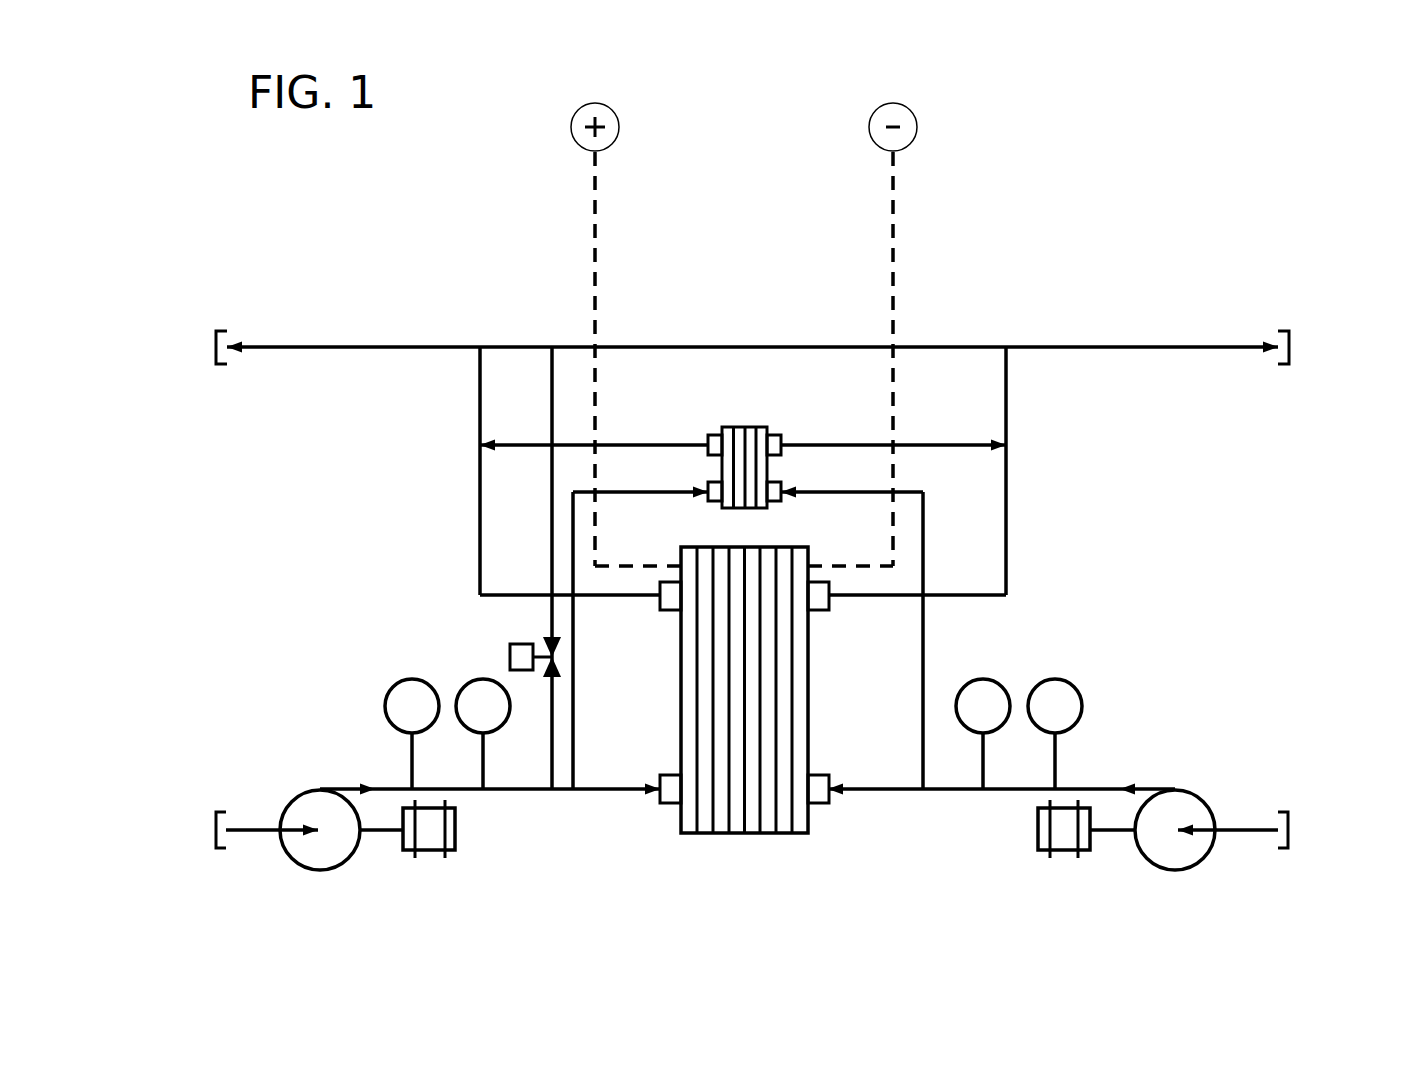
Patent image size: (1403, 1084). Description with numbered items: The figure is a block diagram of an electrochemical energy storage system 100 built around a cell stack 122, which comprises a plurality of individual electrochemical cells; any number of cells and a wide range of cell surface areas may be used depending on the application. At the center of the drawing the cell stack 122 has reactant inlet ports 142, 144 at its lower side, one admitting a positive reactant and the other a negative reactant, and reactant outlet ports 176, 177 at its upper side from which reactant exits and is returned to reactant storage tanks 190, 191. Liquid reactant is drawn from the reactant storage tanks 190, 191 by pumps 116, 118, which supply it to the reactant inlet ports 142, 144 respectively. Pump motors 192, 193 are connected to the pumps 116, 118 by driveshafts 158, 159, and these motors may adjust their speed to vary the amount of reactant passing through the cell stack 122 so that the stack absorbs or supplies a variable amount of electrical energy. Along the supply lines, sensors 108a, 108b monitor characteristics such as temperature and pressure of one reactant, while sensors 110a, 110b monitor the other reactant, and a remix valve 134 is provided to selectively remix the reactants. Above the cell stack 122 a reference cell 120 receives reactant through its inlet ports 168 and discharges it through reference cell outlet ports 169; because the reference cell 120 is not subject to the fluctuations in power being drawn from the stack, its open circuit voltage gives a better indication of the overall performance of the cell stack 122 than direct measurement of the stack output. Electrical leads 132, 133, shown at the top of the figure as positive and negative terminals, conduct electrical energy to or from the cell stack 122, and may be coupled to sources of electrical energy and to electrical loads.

The electrochemical energy storage system 100 is at (478, 210).
The electrical lead 132 is at (573, 118).
The electrical lead 133 is at (915, 118).
The reactant storage tank 190 is at (216, 330).
The reactant storage tank 191 is at (1287, 340).
The reference cell 120 is at (745, 427).
The reference cell outlet ports 169 is at (713, 435).
The reference cell inlet ports 168 is at (713, 502).
The cell stack 122 is at (745, 835).
The reactant outlet port 176 is at (672, 612).
The reactant outlet port 177 is at (820, 612).
The reactant inlet port 142 is at (668, 803).
The reactant inlet port 144 is at (837, 803).
The remix valve 134 is at (508, 648).
The sensor 108a is at (410, 680).
The sensor 108b is at (480, 680).
The sensor 110a is at (1053, 680).
The sensor 110b is at (985, 680).
The pump 116 is at (302, 792).
The pump 118 is at (1200, 795).
The driveshaft 158 is at (374, 832).
The driveshaft 159 is at (1122, 832).
The pump motor 192 is at (447, 852).
The pump motor 193 is at (1043, 850).